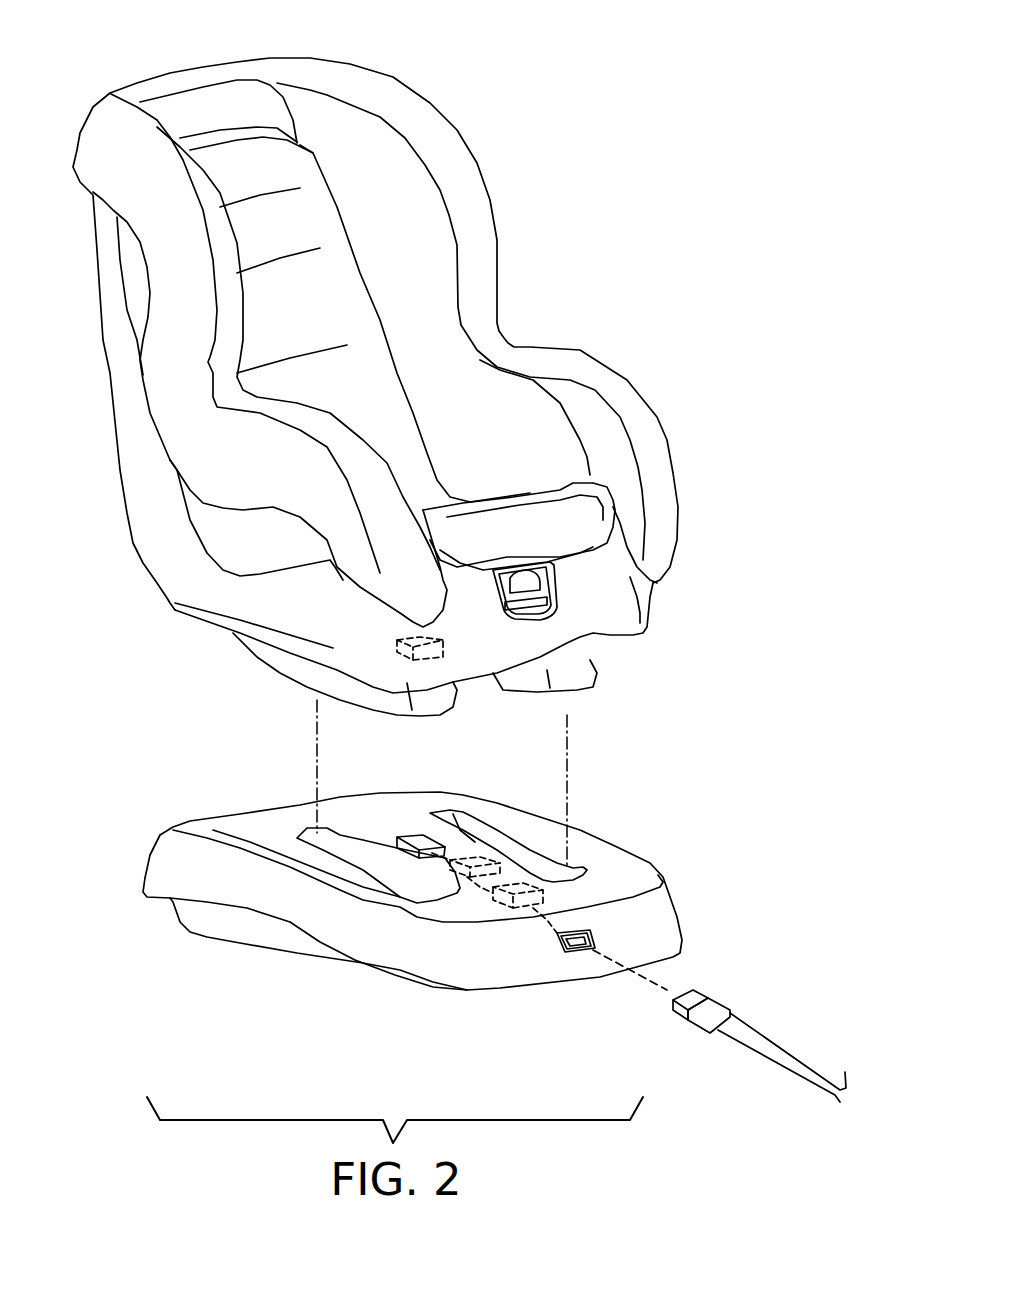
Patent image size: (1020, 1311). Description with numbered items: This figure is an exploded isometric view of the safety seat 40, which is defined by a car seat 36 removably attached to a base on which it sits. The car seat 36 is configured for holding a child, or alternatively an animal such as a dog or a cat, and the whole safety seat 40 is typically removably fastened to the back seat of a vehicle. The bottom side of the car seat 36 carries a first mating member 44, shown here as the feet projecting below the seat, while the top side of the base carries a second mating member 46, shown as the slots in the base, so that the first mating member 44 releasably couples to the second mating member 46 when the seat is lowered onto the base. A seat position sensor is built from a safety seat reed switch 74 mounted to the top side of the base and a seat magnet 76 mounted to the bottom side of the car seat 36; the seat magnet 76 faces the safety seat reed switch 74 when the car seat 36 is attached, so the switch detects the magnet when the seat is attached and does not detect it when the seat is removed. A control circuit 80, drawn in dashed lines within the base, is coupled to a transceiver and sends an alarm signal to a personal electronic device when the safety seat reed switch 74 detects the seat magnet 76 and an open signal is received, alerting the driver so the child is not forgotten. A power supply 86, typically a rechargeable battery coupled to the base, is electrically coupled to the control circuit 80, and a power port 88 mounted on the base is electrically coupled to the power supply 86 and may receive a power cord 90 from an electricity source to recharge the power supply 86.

The safety seat 40 is at (622, 118).
The car seat 36 is at (613, 507).
The first mating member 44 is at (604, 687).
The second mating member 46 is at (583, 862).
The safety seat reed switch 74 is at (395, 848).
The seat magnet 76 is at (395, 650).
The control circuit 80 is at (463, 871).
The power supply 86 is at (513, 903).
The power port 88 is at (596, 952).
The power cord 90 is at (778, 1043).